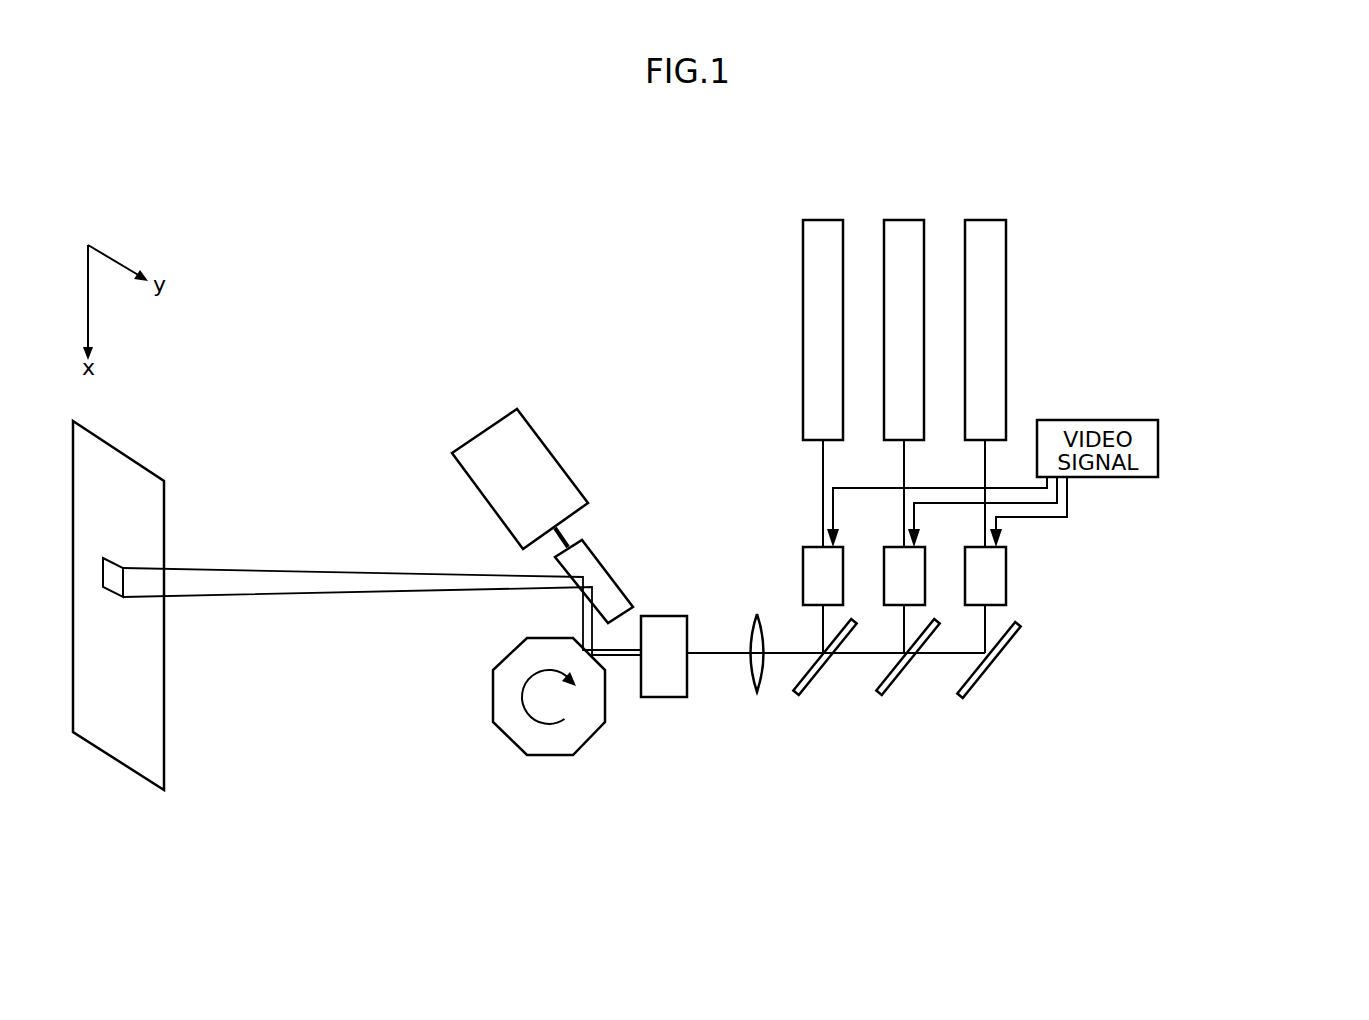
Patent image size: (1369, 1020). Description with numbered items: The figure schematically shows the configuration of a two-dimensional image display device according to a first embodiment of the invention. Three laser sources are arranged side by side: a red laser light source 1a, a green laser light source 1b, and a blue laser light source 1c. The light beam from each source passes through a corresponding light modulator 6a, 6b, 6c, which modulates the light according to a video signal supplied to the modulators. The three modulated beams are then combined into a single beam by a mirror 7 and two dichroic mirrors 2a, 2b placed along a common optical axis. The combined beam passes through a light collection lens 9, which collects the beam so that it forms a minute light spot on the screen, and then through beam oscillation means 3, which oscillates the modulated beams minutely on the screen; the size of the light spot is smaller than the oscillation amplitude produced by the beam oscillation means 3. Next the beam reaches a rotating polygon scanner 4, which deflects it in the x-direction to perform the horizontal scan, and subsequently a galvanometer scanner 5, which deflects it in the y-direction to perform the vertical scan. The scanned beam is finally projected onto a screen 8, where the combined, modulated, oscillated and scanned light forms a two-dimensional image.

The red laser light source 1a is at (983, 230).
The green laser light source 1b is at (905, 230).
The blue laser light source 1c is at (822, 230).
The dichroic mirror 2a is at (905, 665).
The dichroic mirror 2b is at (830, 673).
The beam oscillation means 3 is at (667, 625).
The polygon scanner 4 is at (510, 730).
The galvanometer scanner 5 is at (490, 438).
The light modulator 6a is at (997, 560).
The light modulator 6b is at (918, 580).
The light modulator 6c is at (837, 588).
The mirror 7 is at (997, 658).
The screen 8 is at (131, 472).
The light collection lens 9 is at (747, 670).